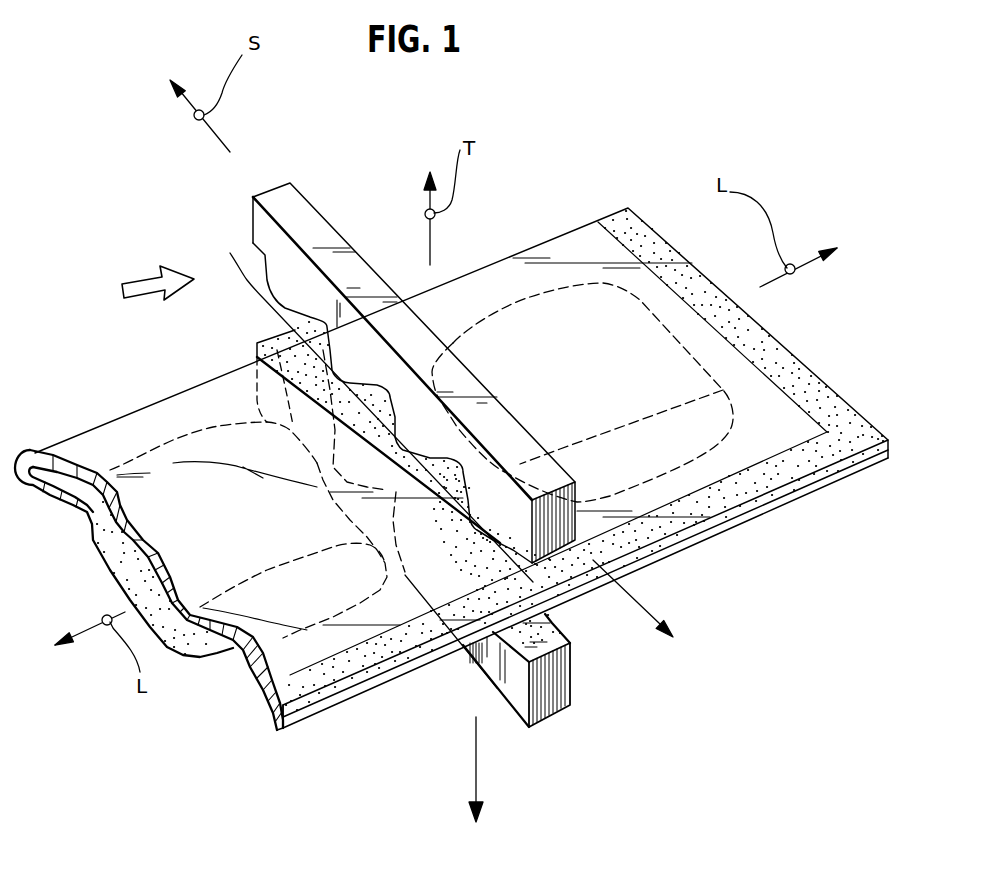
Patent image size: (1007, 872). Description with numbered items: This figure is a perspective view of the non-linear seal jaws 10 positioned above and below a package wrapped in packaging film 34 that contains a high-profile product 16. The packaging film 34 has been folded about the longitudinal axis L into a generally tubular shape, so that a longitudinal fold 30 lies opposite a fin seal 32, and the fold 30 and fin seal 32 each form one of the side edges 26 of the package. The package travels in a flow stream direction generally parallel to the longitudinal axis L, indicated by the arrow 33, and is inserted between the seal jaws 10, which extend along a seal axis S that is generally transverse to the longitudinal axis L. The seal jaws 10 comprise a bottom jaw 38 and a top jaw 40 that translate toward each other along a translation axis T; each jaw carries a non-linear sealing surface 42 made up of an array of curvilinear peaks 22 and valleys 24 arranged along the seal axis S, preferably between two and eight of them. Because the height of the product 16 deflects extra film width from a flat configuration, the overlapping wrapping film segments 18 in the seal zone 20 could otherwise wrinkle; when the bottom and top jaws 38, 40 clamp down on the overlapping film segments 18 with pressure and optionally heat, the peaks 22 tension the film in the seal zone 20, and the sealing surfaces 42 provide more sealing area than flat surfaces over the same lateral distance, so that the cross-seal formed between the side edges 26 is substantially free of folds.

The non-linear seal jaws 10 is at (627, 692).
The high-profile product 16 is at (213, 447).
The overlapping wrapping film segments 18 is at (320, 684).
The seal zone 20 is at (290, 348).
The curvilinear peaks 22 is at (481, 510).
The valleys 24 is at (505, 615).
The side edges 26 is at (157, 407).
The longitudinal fold 30 is at (103, 427).
The fin seal 32 is at (293, 688).
The direction of movement 33 is at (145, 281).
The packaging film 34 is at (555, 250).
The bottom jaw 38 is at (550, 695).
The top jaw 40 is at (567, 672).
The non-linear sealing surface 42 is at (256, 292).